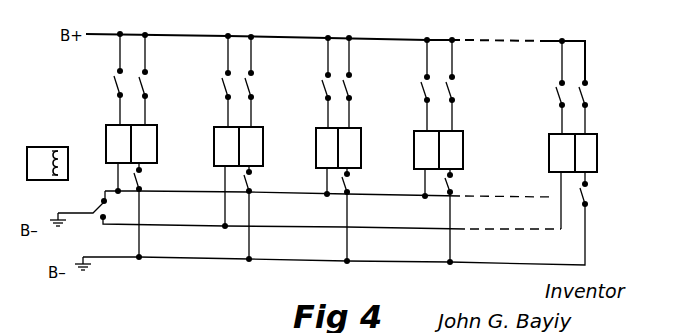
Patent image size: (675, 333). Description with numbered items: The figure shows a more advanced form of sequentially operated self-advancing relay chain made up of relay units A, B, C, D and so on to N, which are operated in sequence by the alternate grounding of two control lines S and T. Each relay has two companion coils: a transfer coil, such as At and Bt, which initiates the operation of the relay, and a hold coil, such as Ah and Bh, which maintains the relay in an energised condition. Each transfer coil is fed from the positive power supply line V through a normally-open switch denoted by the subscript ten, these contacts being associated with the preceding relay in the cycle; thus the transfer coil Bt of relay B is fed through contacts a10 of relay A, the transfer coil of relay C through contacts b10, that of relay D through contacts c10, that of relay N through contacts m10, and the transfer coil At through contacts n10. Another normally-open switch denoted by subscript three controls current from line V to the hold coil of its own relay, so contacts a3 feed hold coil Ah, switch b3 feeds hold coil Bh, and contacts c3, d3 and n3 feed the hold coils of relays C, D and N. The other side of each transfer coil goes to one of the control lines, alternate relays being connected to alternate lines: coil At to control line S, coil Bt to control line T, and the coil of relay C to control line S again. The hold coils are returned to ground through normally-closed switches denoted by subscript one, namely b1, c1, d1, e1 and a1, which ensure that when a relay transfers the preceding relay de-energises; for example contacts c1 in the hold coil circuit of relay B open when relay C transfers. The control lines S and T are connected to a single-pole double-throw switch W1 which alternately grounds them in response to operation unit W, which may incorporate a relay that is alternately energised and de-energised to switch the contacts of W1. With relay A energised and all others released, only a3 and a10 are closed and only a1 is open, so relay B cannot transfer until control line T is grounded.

The B+ power supply line V is at (335, 49).
The control line S is at (329, 187).
The control line T is at (332, 200).
The operation unit W is at (38, 146).
The single-pole double-throw switch W1 is at (78, 208).
The normally-open contacts n10 is at (102, 79).
The normally-open contacts a3 is at (152, 80).
The normally-open contacts a10 is at (206, 81).
The normally-open contacts b3 is at (258, 82).
The normally-open contacts b10 is at (312, 83).
The normally-open contacts c3 is at (356, 83).
The normally-open contacts c10 is at (412, 85).
The normally-open contacts d3 is at (460, 85).
The normally-open contacts m10 is at (539, 87).
The normally-open contacts n3 is at (593, 105).
The normally-closed contacts b1 is at (147, 211).
The normally-closed contacts c1 is at (257, 214).
The normally-closed contacts d1 is at (355, 216).
The normally-closed contacts e1 is at (458, 217).
The normally-closed contacts a1 is at (531, 218).
The transfer coil At is at (118, 144).
The hold coil Ah is at (144, 144).
The transfer coil Bt is at (226, 146).
The hold coil Bh is at (251, 146).
The relay unit C is at (346, 148).
The relay unit D is at (446, 150).
The relay unit N is at (582, 153).